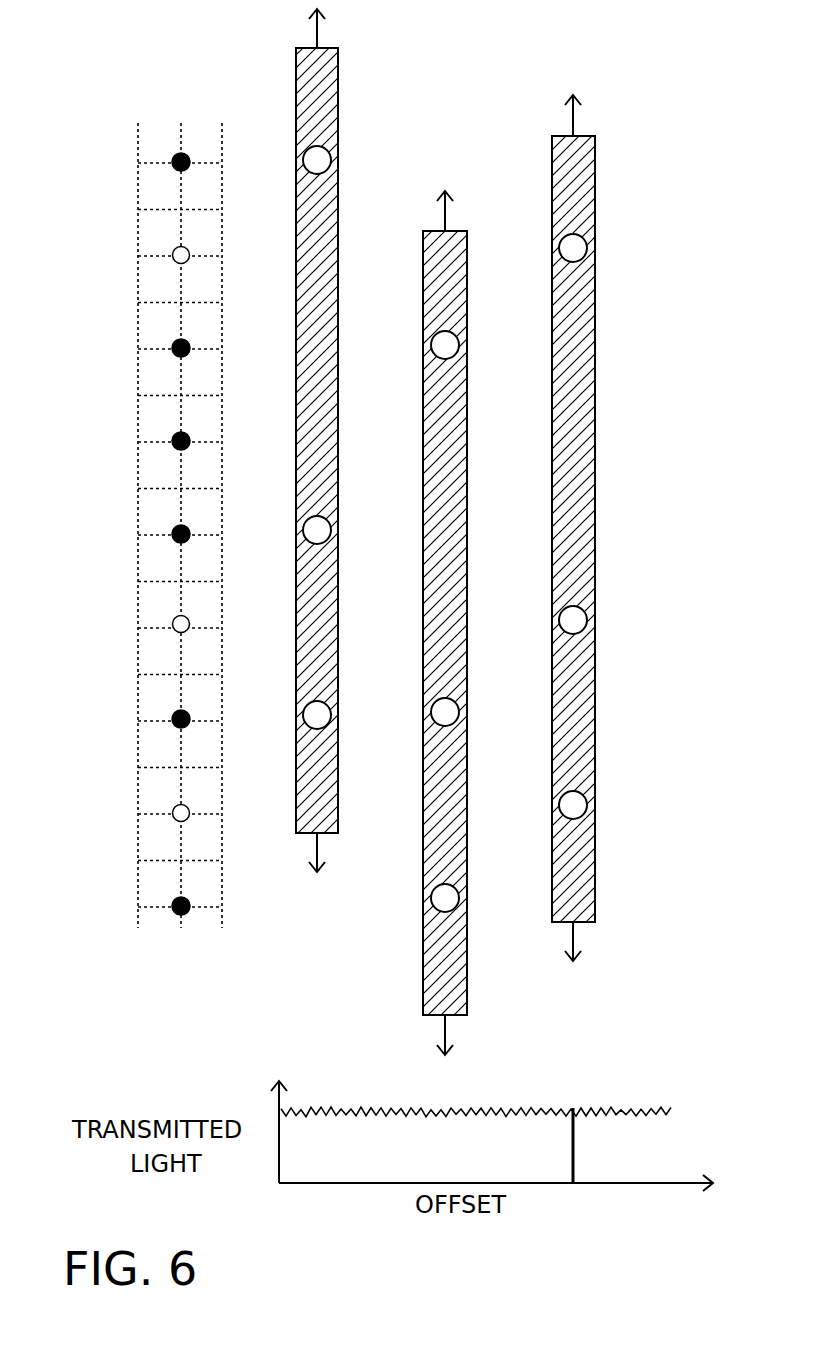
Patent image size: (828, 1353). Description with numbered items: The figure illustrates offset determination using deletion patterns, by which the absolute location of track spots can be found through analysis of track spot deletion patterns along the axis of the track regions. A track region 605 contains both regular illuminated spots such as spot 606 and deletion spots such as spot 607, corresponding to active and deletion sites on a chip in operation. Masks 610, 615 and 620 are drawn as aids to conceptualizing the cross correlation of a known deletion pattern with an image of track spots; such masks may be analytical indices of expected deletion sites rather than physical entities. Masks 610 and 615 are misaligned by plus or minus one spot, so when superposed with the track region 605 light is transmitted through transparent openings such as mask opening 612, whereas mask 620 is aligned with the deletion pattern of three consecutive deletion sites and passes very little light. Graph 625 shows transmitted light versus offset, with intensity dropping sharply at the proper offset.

The track region 605 is at (222, 930).
The regular illuminated spot 606 is at (170, 722).
The deletion spot 607 is at (172, 626).
The mask 610 is at (328, 80).
The mask opening 612 is at (325, 711).
The mask 615 is at (457, 252).
The mask 620 is at (585, 166).
The graph 625 is at (430, 1163).